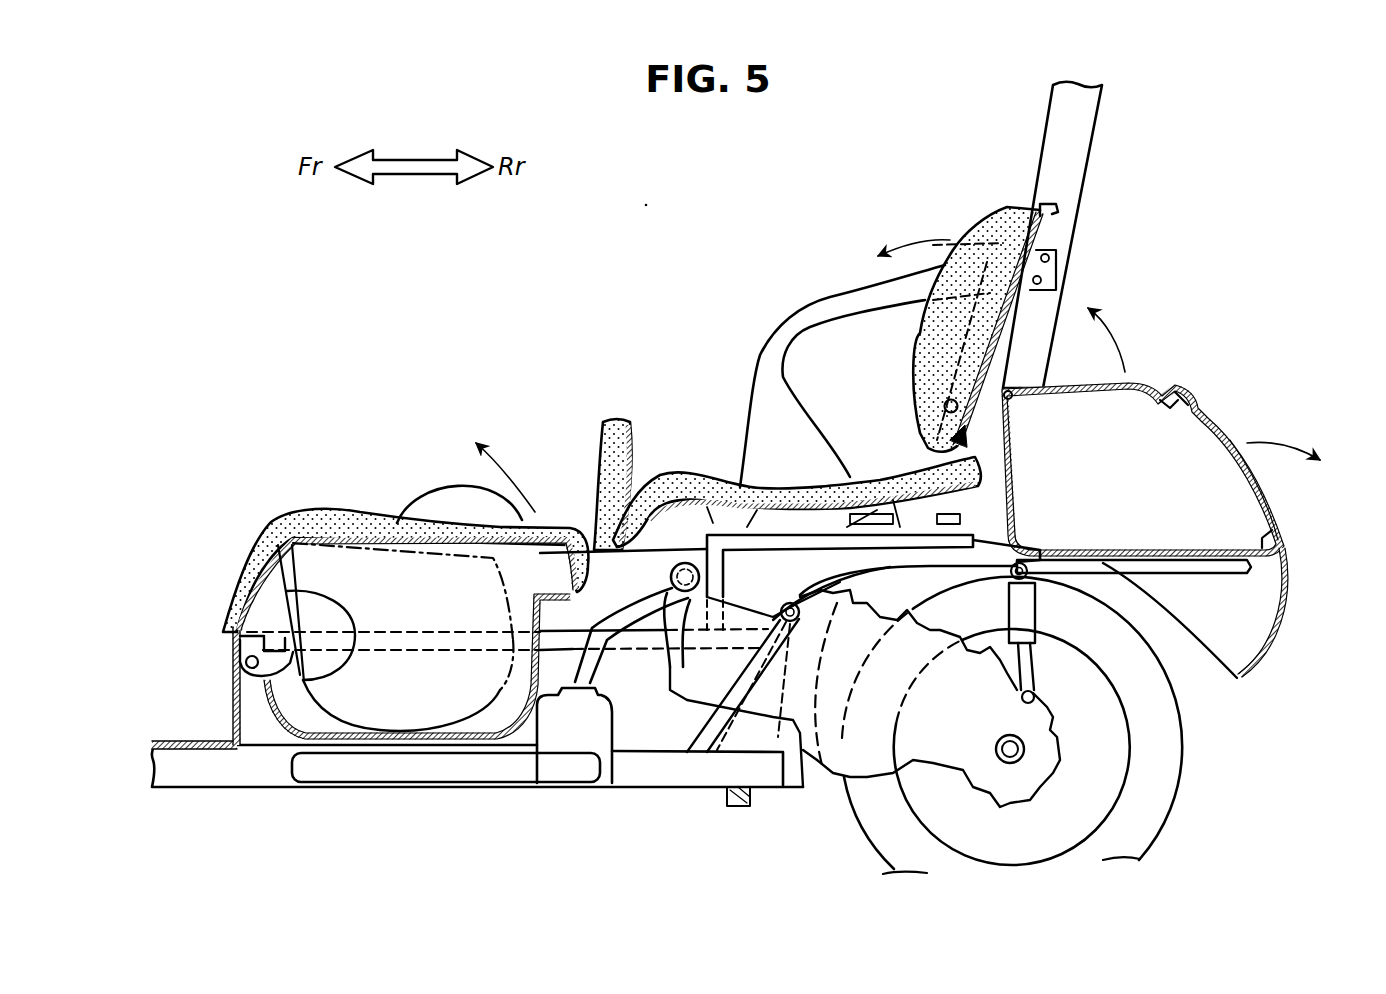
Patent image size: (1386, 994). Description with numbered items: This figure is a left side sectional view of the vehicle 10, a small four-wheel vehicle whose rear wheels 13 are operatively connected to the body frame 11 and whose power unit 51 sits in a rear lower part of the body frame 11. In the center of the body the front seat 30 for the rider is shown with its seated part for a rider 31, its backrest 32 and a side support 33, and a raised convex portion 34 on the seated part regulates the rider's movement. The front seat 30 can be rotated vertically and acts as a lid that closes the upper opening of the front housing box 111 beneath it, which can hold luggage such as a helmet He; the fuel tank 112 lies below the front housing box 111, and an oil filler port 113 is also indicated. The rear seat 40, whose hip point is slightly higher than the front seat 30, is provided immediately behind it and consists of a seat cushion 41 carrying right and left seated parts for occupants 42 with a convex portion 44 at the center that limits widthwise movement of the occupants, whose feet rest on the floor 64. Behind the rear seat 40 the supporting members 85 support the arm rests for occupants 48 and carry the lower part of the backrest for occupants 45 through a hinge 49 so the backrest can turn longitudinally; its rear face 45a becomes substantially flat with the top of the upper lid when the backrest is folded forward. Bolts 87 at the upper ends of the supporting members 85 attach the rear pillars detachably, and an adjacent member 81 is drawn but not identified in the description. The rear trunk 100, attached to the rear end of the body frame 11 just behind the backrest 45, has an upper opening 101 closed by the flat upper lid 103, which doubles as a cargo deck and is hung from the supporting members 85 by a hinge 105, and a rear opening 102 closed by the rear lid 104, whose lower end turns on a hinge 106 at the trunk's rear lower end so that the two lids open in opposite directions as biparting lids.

The vehicle 10 is at (185, 308).
The body frame 11 is at (170, 788).
The rear wheel 13 is at (1158, 815).
The front seat 30 is at (245, 543).
The seated part for a rider 31 is at (373, 513).
The backrest 32 is at (614, 420).
The side support 33 is at (443, 492).
The raised convex portion 34 is at (287, 510).
The rear seat 40 is at (797, 483).
The seat cushion 41 is at (751, 482).
The seated part for occupants 42 is at (831, 593).
The convex portion 44 is at (678, 478).
The backrest for occupants 45 is at (997, 213).
The rear face of the backrest 45a is at (1045, 233).
The arm rest for occupants 48 is at (855, 300).
The hinge 49 is at (940, 406).
The power unit 51 is at (838, 788).
The floor 64 is at (165, 742).
The rear post 81 is at (1108, 110).
The supporting member 85 is at (1030, 318).
The bolt 87 is at (1040, 281).
The rear trunk 100 is at (1222, 576).
The upper opening 101 is at (1012, 405).
The rear opening 102 is at (1275, 523).
The upper lid 103 is at (1180, 387).
The rear lid 104 is at (1268, 492).
The hinge 105 is at (1010, 380).
The hinge 106 is at (1283, 548).
The front housing box 111 is at (282, 712).
The fuel tank 112 is at (455, 772).
The oil filler port 113 is at (648, 682).
The helmet He is at (318, 705).